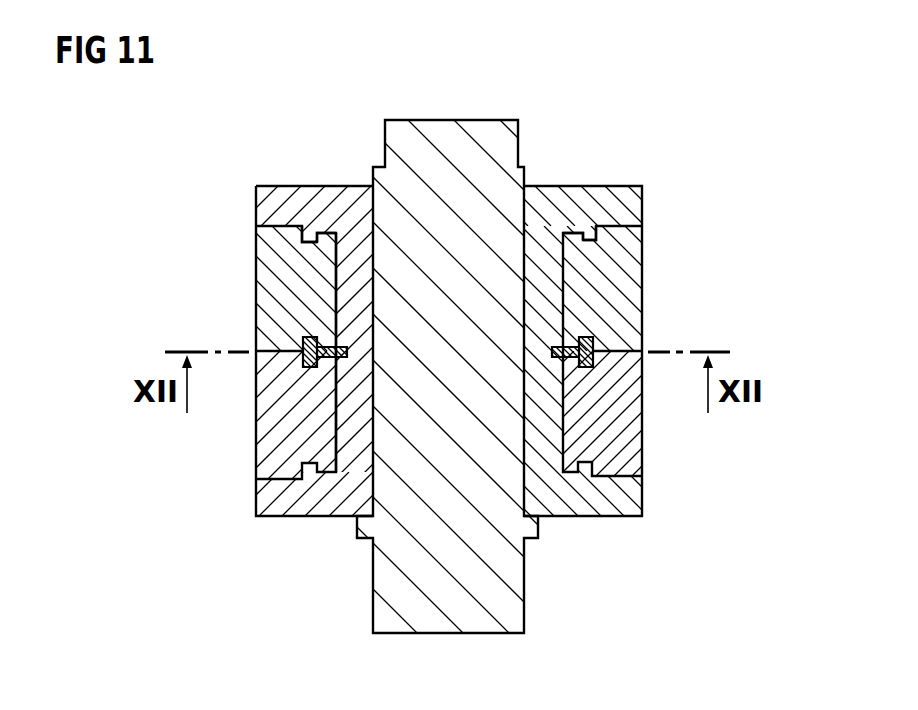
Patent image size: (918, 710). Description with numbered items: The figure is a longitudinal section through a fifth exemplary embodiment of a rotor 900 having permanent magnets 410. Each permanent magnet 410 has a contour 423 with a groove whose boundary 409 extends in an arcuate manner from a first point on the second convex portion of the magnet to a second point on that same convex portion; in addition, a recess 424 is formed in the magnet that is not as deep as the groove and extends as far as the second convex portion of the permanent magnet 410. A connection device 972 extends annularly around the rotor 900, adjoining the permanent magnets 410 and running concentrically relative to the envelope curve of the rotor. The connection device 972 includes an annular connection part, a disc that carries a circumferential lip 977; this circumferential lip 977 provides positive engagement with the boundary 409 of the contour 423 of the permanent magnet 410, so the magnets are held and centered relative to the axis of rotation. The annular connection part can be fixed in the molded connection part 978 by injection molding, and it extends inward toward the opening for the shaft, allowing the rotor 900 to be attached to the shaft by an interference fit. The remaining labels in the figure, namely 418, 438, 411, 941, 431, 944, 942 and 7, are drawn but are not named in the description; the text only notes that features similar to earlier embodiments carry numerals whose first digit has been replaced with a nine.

The rotor 900 is at (412, 106).
The permanent magnets 410 is at (256, 248).
The groove 418 is at (312, 233).
The boundary 409 is at (327, 226).
The contour 423 is at (583, 232).
The recess 424 is at (609, 216).
The pin 438 is at (303, 338).
The circumferential lip 977 is at (589, 342).
The molded connection part 978 is at (348, 415).
The first bearing 411 is at (156, 192).
The second bearing 941 is at (750, 191).
The center axis 431 is at (156, 350).
The center axis 944 is at (747, 353).
The bearing portion 942 is at (745, 515).
The connection device 972 is at (302, 538).
The direction of view 7 is at (678, 583).